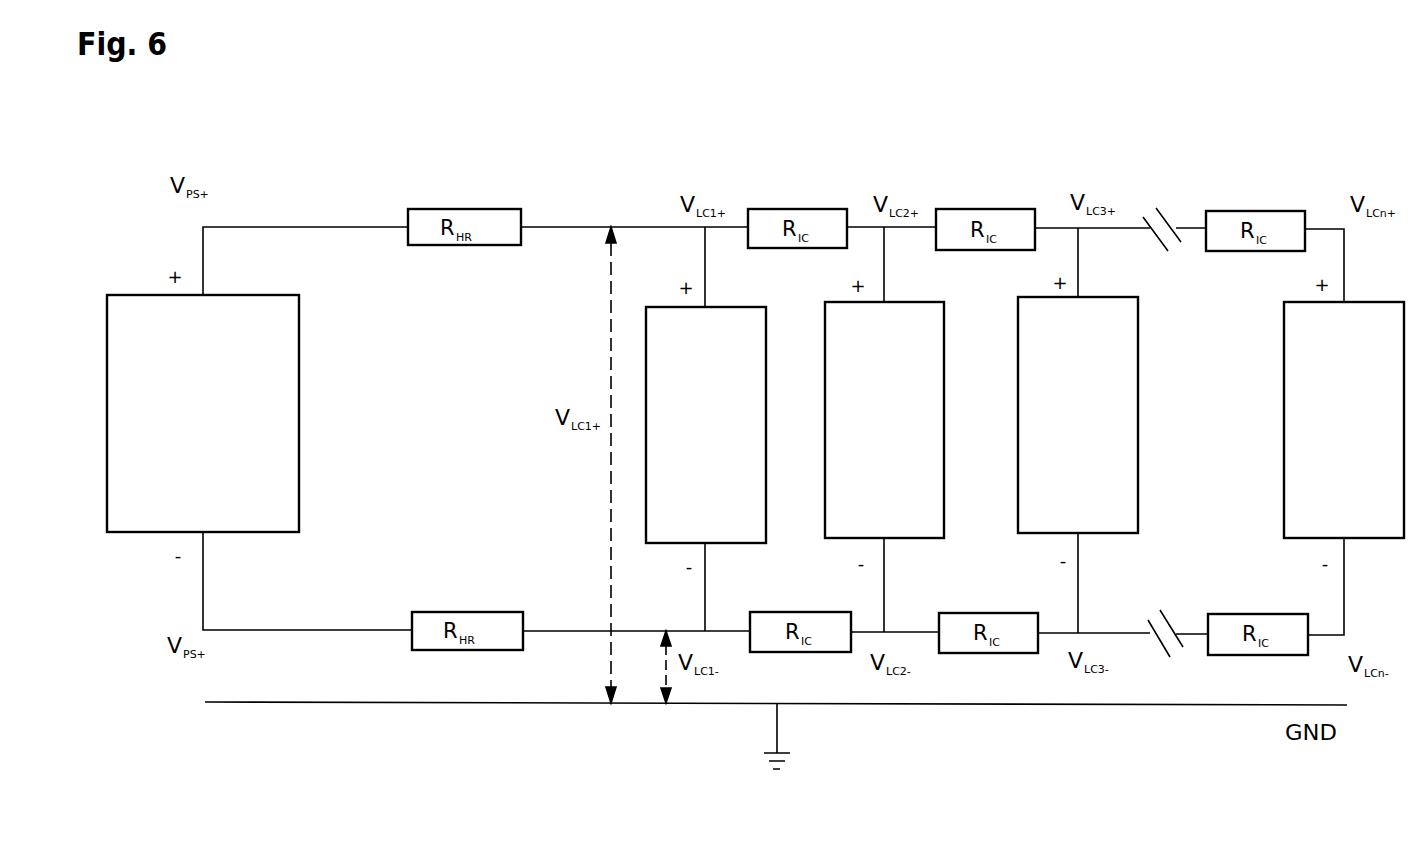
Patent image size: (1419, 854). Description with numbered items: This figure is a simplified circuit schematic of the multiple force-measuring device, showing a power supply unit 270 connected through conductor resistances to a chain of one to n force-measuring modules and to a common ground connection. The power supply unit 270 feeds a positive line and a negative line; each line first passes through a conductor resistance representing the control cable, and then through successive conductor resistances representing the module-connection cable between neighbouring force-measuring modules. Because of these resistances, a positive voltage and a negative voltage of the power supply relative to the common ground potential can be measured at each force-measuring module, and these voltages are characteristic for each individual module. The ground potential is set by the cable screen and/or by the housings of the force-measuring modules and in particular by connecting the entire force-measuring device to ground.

The power supply unit 270 is at (203, 413).